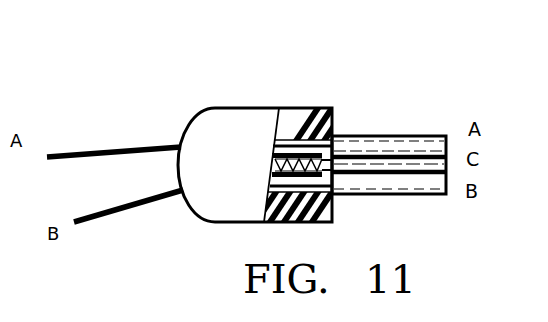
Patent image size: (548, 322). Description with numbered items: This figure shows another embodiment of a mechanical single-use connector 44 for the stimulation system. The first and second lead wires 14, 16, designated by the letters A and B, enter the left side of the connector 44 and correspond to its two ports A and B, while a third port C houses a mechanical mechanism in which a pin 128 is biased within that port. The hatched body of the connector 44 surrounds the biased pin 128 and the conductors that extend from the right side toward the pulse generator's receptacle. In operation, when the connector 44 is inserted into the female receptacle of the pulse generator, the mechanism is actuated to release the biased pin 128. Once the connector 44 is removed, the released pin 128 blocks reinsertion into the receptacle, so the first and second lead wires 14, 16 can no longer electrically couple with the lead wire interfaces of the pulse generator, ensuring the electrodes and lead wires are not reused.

The first lead wire 14 is at (110, 148).
The second lead wire 16 is at (128, 208).
The connector 44 is at (248, 130).
The pin 128 is at (389, 160).